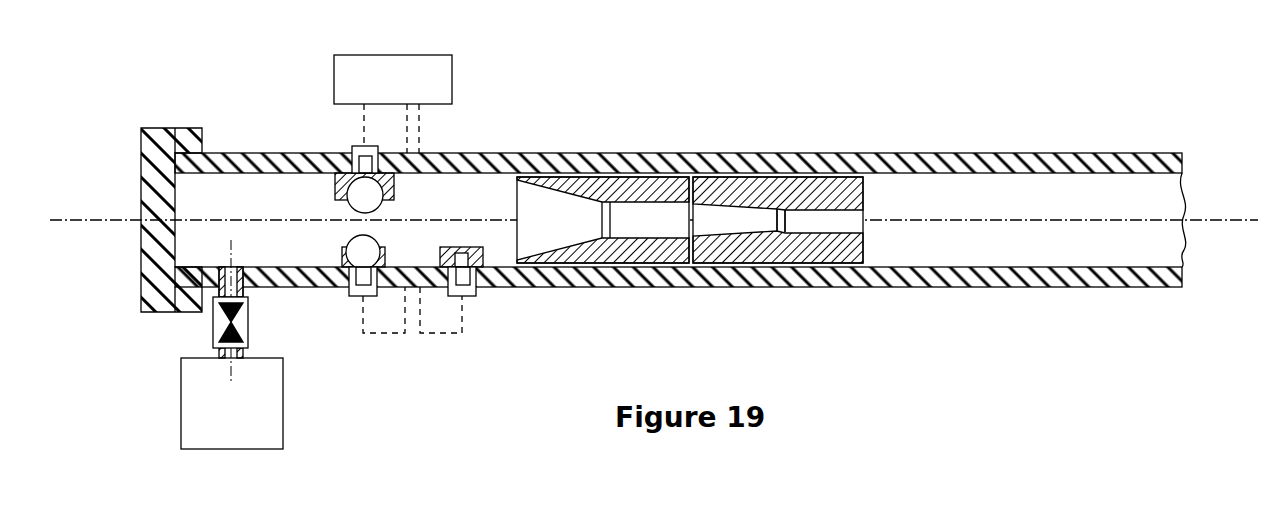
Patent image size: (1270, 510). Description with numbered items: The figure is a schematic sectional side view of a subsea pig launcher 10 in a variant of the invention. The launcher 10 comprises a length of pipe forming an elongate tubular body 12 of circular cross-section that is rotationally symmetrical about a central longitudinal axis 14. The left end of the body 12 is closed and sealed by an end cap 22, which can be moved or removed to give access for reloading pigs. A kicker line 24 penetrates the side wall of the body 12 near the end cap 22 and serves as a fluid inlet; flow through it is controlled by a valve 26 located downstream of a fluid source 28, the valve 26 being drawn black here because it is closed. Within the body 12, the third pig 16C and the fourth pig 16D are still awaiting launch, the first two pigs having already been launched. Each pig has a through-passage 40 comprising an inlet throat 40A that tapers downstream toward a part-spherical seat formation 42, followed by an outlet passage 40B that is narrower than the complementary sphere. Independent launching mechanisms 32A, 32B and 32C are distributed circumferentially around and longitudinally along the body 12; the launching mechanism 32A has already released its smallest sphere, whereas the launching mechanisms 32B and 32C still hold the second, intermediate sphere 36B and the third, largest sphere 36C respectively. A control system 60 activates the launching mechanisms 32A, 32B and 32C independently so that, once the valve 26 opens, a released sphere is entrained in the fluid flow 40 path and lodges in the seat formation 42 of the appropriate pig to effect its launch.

The subsea pig launcher 10 is at (970, 127).
The elongate tubular body 12 is at (1128, 160).
The central longitudinal axis 14 is at (1242, 220).
The third pig 16C is at (762, 187).
The fourth pig 16D is at (660, 250).
The end cap 22 is at (152, 166).
The kicker line 24 is at (245, 289).
The valve 26 is at (219, 326).
The fluid source 28 is at (188, 409).
The launching mechanism 32A is at (458, 282).
The launching mechanism 32B is at (356, 297).
The launching mechanism 32C is at (352, 147).
The second, intermediate sphere 36B is at (363, 248).
The third, largest sphere 36C is at (358, 200).
The through-passage 40 is at (561, 229).
The inlet throat 40A is at (635, 212).
The outlet passage 40B is at (820, 217).
The seat formation 42 is at (783, 240).
The control system 60 is at (442, 82).